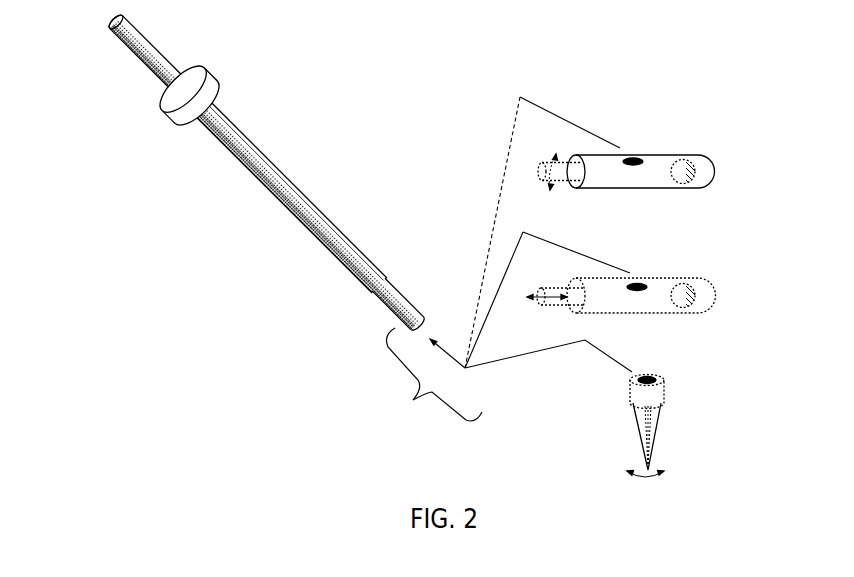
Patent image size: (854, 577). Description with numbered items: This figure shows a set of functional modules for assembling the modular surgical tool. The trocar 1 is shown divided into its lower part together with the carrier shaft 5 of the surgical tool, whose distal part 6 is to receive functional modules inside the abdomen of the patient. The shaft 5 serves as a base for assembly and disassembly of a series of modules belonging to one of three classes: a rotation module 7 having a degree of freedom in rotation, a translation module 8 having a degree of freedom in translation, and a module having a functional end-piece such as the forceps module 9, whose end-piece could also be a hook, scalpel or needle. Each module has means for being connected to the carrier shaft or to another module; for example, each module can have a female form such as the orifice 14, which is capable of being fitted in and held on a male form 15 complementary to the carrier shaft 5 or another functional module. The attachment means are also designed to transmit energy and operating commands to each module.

The trocar 1 is at (198, 86).
The carrier shaft 5 is at (281, 168).
The distal part 6 is at (434, 375).
The rotation module 7 is at (626, 188).
The translation module 8 is at (618, 309).
The forceps module 9 is at (650, 426).
The orifice 14 is at (640, 277).
The male form 15 is at (535, 282).